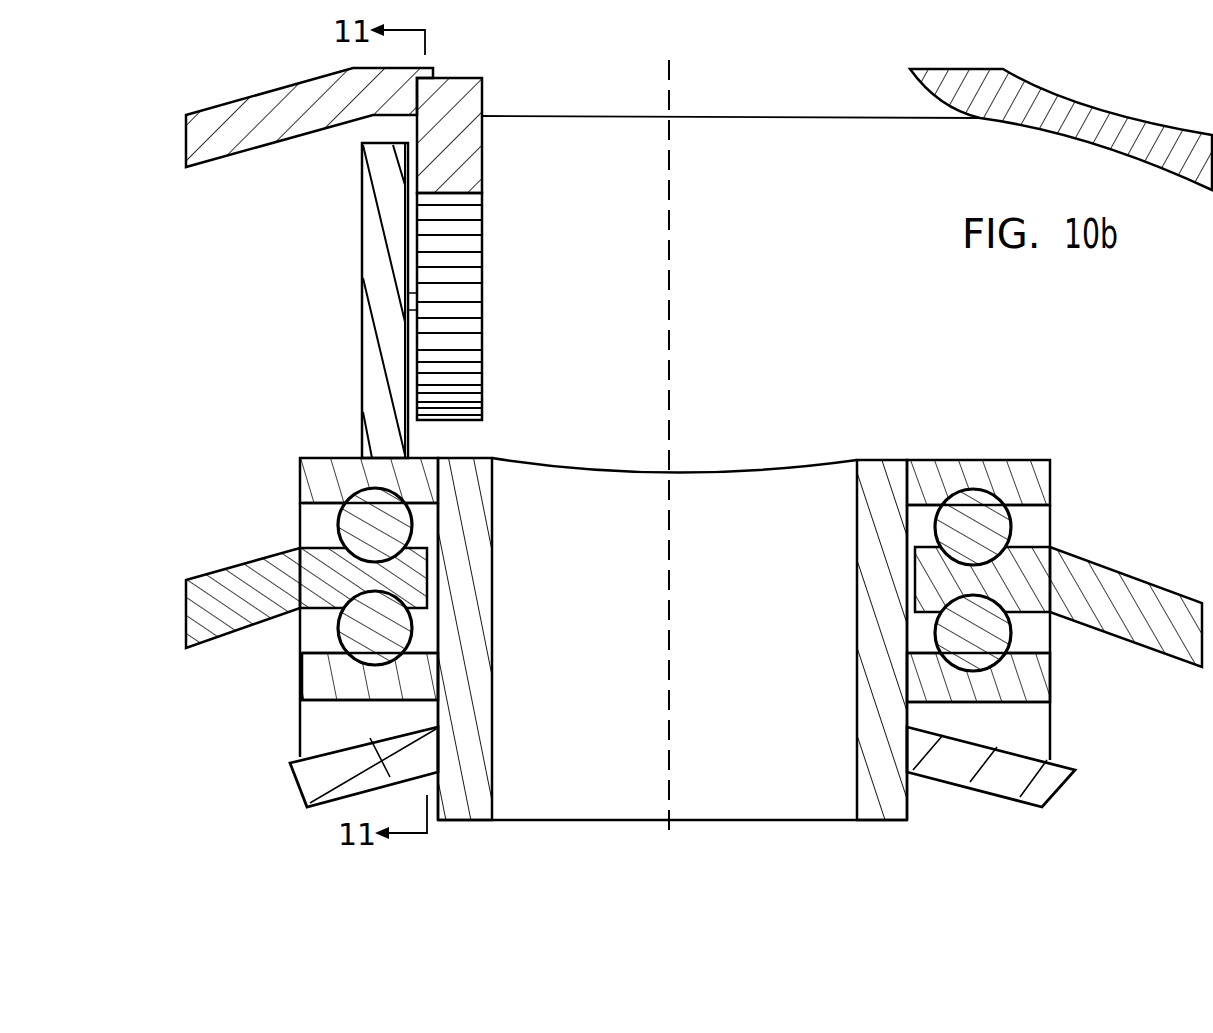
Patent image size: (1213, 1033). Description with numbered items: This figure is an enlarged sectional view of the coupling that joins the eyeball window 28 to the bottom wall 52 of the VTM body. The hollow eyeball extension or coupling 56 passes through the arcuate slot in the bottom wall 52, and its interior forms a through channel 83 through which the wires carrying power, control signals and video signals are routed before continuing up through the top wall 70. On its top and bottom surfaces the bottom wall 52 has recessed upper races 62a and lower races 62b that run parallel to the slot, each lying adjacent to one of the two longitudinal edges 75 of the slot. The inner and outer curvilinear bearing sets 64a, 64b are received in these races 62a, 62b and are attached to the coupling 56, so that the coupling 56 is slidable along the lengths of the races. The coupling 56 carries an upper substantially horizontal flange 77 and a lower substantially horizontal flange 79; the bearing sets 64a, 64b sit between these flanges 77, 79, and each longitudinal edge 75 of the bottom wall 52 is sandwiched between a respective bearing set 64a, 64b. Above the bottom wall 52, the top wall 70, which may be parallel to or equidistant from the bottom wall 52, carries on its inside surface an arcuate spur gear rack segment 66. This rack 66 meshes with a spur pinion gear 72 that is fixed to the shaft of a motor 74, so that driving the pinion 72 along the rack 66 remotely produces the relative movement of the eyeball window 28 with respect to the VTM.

The eyeball window 28 is at (310, 772).
The bottom wall 52 is at (225, 583).
The hollow eyeball extension (coupling) 56 is at (892, 468).
The upper race 62a is at (387, 540).
The lower race 62b is at (405, 650).
The inner curvilinear bearing set 64a is at (355, 512).
The outer curvilinear bearing set 64b is at (360, 632).
The arcuate spur gear rack segment 66 is at (470, 164).
The top wall 70 is at (266, 105).
The spur pinion gear 72 is at (470, 292).
The motor 74 is at (372, 248).
The longitudinal edge 75 is at (440, 584).
The upper substantially horizontal flange 77 is at (308, 490).
The lower substantially horizontal flange 79 is at (315, 682).
The through channel 83 is at (772, 723).